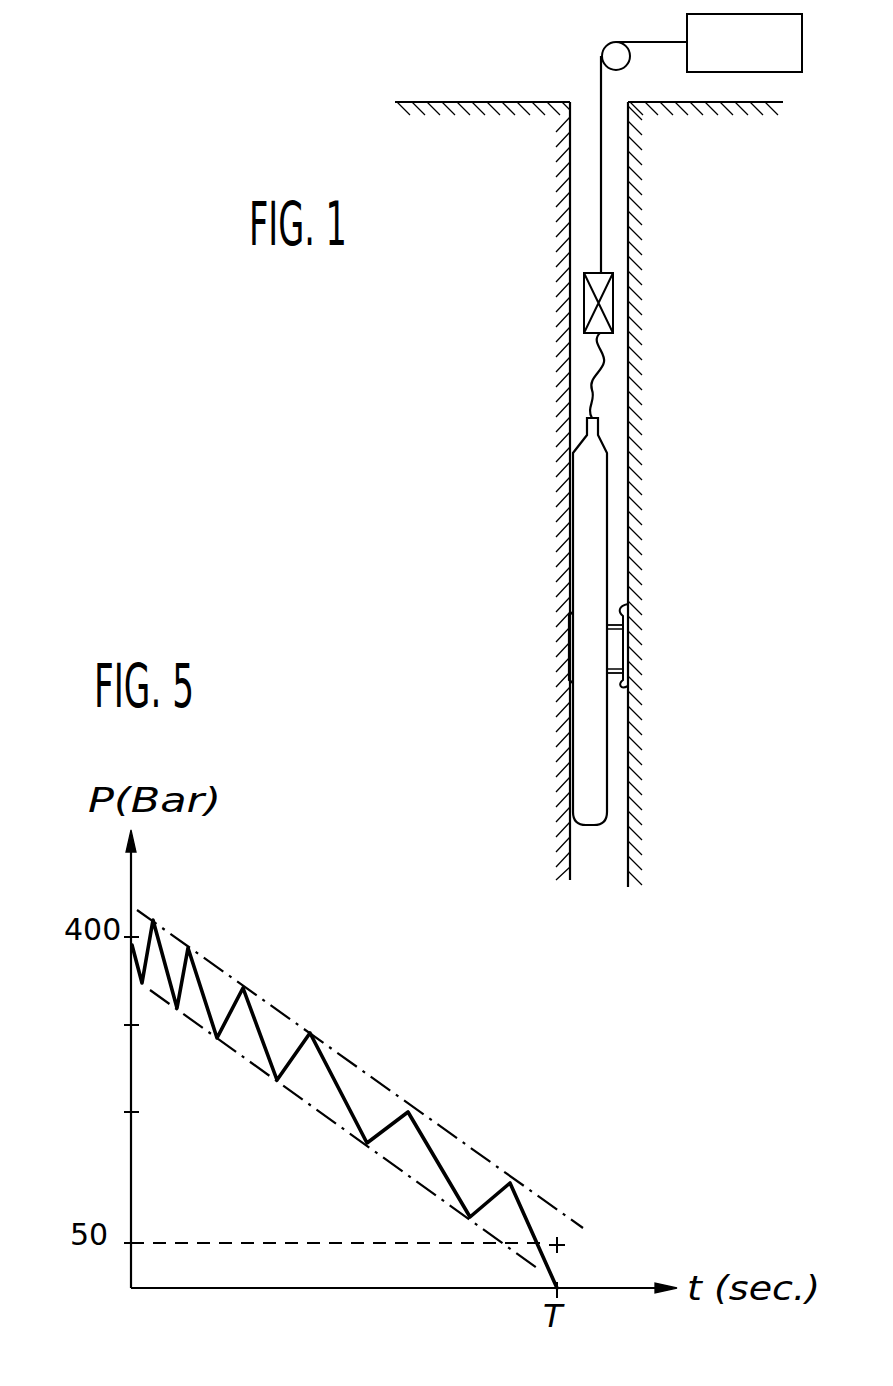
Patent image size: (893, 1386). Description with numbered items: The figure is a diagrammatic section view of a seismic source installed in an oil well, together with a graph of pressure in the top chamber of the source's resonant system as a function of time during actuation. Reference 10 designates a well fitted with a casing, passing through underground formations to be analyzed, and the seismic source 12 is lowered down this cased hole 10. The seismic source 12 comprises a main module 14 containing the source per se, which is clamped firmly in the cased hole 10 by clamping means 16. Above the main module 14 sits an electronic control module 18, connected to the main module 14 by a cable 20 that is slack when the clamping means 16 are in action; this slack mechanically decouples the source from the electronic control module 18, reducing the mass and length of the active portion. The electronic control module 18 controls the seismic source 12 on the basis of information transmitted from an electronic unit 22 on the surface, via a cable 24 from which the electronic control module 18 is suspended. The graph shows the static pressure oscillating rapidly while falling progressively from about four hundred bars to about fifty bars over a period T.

The well 10 is at (628, 198).
The seismic source 12 is at (576, 430).
The main module 14 is at (593, 550).
The clamping means 16 is at (627, 615).
The electronic control module 18 is at (604, 300).
The cable 20 is at (593, 403).
The electronic unit 22 is at (744, 43).
The cable 24 is at (601, 88).